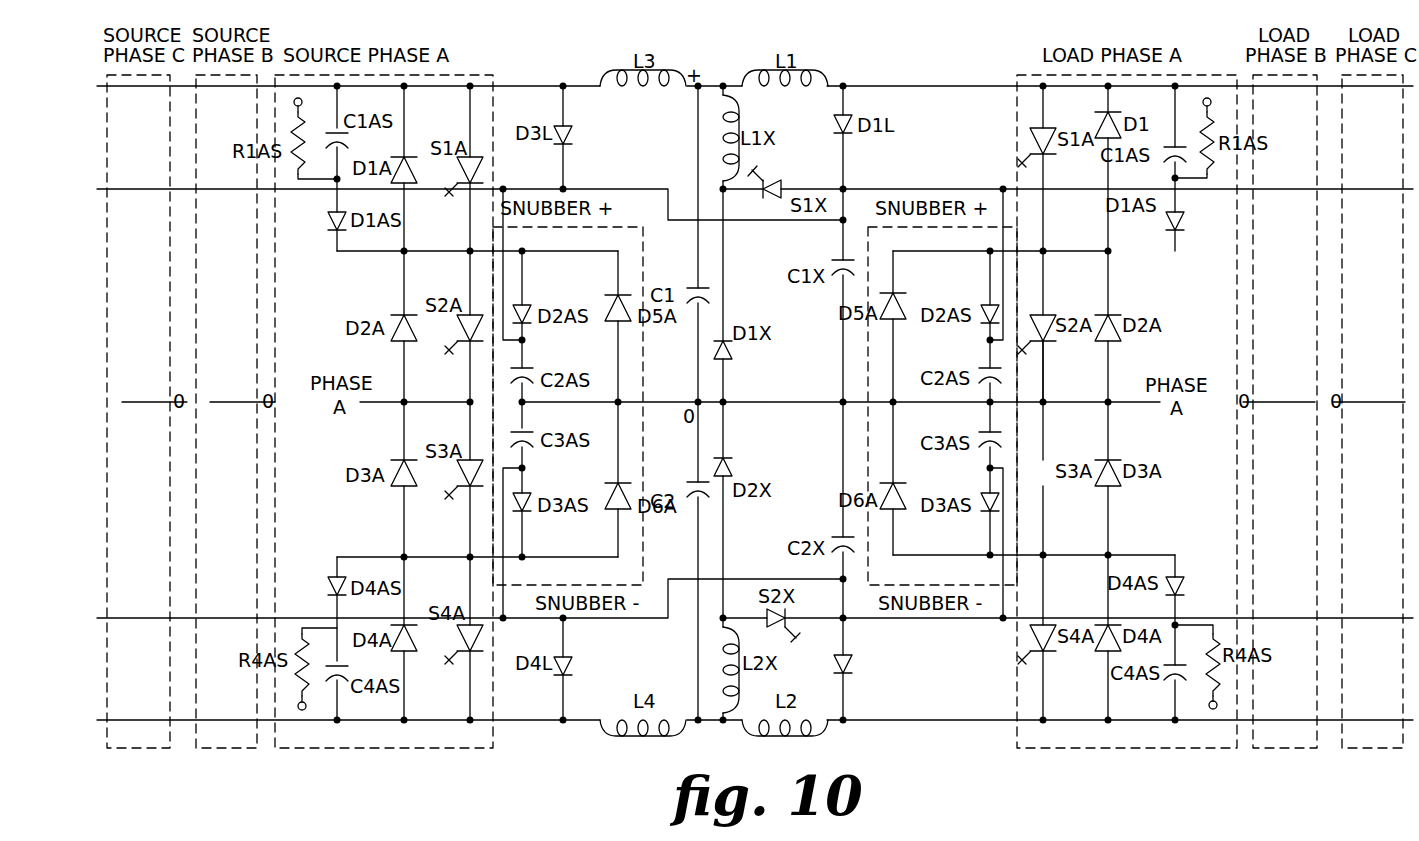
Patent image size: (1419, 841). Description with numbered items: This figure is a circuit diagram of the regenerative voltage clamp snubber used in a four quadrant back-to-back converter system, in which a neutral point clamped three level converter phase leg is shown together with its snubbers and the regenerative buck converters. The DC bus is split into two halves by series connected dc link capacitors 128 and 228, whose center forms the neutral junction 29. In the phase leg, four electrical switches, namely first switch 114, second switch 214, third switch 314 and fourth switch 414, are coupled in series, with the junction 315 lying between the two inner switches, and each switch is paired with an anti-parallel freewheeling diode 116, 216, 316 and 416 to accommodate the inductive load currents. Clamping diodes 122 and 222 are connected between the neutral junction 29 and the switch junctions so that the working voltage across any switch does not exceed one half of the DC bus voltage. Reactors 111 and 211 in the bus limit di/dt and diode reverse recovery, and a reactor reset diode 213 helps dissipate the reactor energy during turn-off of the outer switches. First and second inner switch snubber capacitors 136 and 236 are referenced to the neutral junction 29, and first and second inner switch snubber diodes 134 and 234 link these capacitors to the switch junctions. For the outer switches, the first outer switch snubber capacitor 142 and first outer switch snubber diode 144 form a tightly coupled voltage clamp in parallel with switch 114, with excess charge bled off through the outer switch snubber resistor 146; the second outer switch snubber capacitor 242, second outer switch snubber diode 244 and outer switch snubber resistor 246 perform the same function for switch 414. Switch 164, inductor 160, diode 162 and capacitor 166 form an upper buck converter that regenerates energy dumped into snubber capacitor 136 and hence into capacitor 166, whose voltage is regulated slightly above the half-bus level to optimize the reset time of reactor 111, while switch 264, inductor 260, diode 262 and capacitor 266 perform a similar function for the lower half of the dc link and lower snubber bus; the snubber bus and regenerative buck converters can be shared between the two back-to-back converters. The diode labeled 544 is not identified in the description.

The reactor 111 is at (830, 80).
The diode D1L 544 is at (833, 124).
The inductor 160 is at (712, 138).
The switch 164 is at (782, 184).
The capacitor 166 is at (836, 264).
The dc link capacitor 128 is at (690, 286).
The neutral junction 29 is at (695, 402).
The diode 162 is at (733, 352).
The diode 262 is at (735, 457).
The dc link capacitor 228 is at (690, 480).
The clamping diode 122 is at (880, 325).
The clamping diode 222 is at (880, 478).
The capacitor 266 is at (837, 540).
The inductor 260 is at (712, 648).
The switch 264 is at (776, 628).
The reactor reset diode 213 is at (847, 652).
The reactor 211 is at (827, 722).
The first switch 114 is at (1036, 128).
The freewheeling diode 116 is at (1098, 125).
The first outer switch snubber capacitor 142 is at (1172, 140).
The outer switch snubber resistor 146 is at (1208, 122).
The first outer switch snubber diode 144 is at (1185, 218).
The first inner switch snubber diode 134 is at (985, 305).
The second switch 214 is at (1052, 312).
The freewheeling diode 216 is at (1118, 315).
The first inner switch snubber capacitor 136 is at (985, 368).
The junction 315 is at (1048, 398).
The second inner switch snubber capacitor 236 is at (985, 430).
The third switch 314 is at (1050, 457).
The freewheeling diode 316 is at (1120, 458).
The second inner switch snubber diode 234 is at (985, 503).
The second outer switch snubber diode 244 is at (1185, 583).
The fourth switch 414 is at (1032, 635).
The freewheeling diode 416 is at (1098, 652).
The second outer switch snubber capacitor 242 is at (1178, 676).
The outer switch snubber resistor 246 is at (1215, 680).